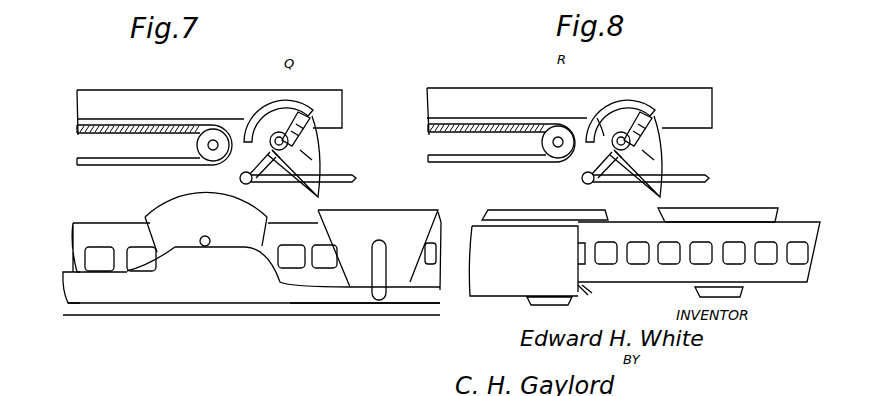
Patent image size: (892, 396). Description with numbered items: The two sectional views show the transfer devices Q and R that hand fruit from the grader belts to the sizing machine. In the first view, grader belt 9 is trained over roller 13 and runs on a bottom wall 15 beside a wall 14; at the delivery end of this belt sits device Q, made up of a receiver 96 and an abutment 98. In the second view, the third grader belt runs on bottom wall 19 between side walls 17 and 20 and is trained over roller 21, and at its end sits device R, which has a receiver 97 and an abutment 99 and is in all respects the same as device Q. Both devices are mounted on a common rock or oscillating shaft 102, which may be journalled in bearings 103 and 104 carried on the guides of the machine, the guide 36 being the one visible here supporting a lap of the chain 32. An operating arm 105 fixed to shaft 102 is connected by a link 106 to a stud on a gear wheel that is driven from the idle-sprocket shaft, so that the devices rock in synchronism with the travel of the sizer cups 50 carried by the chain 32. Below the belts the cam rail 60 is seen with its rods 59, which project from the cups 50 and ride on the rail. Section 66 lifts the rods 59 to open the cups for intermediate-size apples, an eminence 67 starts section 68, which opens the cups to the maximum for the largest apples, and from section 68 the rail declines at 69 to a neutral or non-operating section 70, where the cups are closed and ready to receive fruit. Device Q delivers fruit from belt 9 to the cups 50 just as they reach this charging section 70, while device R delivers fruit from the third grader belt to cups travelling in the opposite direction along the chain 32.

In FIG. 7, the grader belt 9 is at (113, 122).
In FIG. 7, the wall 14 is at (172, 97).
In FIG. 7, the bottom wall 15 is at (124, 134).
In FIG. 7, the roller 13 is at (198, 144).
In FIG. 7, the abutment 98 is at (268, 100).
In FIG. 7, the bearing 103 is at (284, 135).
In FIG. 7, the rock shaft 102 is at (332, 128).
In FIG. 8, the rock shaft 102 is at (652, 128).
In FIG. 7, the receiver 96 is at (312, 152).
In FIG. 7, the operating arm 105 is at (257, 162).
In FIG. 8, the operating arm 105 is at (593, 163).
In FIG. 7, the link 106 is at (362, 174).
In FIG. 8, the link 106 is at (710, 176).
In FIG. 7, the chain 32 is at (98, 225).
In FIG. 8, the chain 32 is at (645, 273).
In FIG. 7, the section 66 is at (97, 298).
In FIG. 7, the eminence 67 is at (152, 273).
In FIG. 7, the section 68 is at (220, 252).
In FIG. 7, the decline 69 is at (260, 297).
In FIG. 7, the rod 59 is at (208, 236).
In FIG. 7, the sizer cup 50 is at (372, 202).
In FIG. 8, the sizer cup 50 is at (737, 208).
In FIG. 7, the cam rail 60 is at (300, 305).
In FIG. 7, the neutral section 70 is at (341, 290).
In FIG. 8, the side wall 17 is at (450, 117).
In FIG. 8, the side wall 20 is at (503, 94).
In FIG. 8, the bottom wall 19 is at (453, 134).
In FIG. 8, the roller 21 is at (545, 142).
In FIG. 8, the abutment 99 is at (620, 100).
In FIG. 8, the bearing 104 is at (590, 113).
In FIG. 8, the receiver 97 is at (638, 150).
In FIG. 8, the guide 36 is at (513, 270).